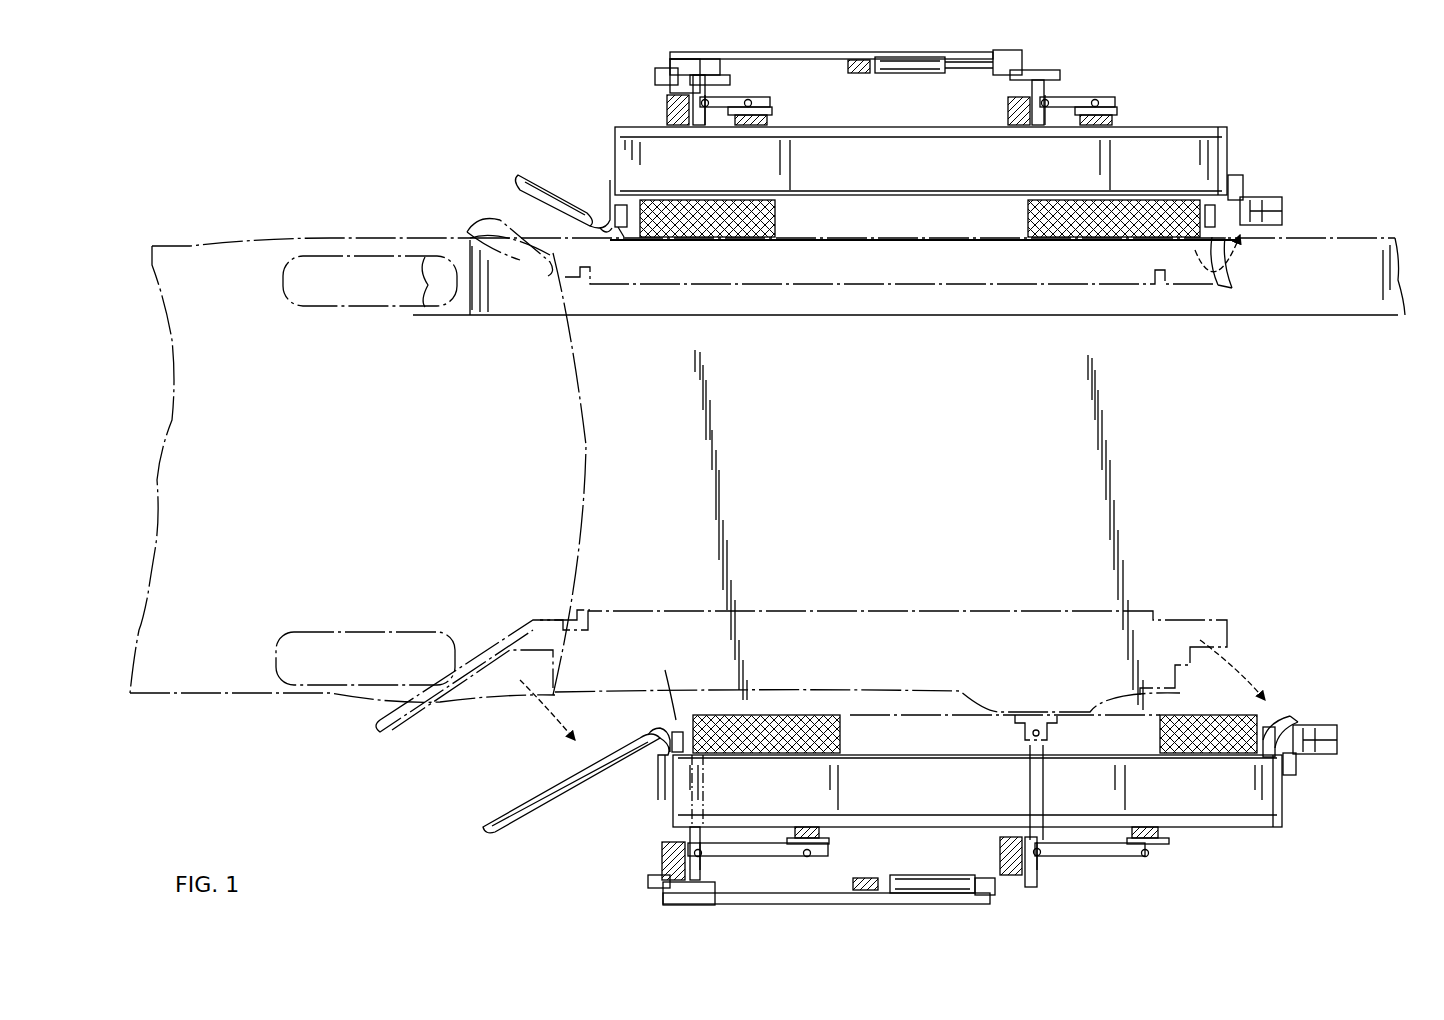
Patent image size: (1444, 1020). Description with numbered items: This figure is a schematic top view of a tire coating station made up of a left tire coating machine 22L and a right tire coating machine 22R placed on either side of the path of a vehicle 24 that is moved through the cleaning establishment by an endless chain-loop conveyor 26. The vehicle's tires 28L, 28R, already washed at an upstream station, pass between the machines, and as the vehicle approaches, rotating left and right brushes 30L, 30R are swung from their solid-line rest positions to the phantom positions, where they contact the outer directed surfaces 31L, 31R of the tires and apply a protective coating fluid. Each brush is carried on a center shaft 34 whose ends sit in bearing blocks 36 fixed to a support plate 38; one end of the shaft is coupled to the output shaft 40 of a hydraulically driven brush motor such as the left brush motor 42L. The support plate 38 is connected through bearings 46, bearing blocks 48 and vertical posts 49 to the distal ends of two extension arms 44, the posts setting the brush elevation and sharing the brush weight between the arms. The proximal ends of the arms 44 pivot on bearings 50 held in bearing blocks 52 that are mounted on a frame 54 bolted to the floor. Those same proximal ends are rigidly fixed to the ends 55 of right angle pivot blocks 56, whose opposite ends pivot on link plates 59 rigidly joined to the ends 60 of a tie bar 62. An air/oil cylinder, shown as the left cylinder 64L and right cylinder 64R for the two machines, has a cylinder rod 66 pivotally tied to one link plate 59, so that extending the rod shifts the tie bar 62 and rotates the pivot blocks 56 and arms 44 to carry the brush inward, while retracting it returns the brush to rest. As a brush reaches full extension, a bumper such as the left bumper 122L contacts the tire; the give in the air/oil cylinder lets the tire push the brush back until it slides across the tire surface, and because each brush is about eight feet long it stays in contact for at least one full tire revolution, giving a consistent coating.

The left tire coating machine 22L is at (900, 481).
The right tire coating machine 22R is at (1295, 850).
The vehicle 24 is at (590, 510).
The conveyor 26 is at (822, 305).
The left tire 28L is at (308, 308).
The right tire 28R is at (395, 630).
The left brush 30L is at (1070, 245).
The right brush 30R is at (1192, 708).
The outer surface of left tire 31L is at (378, 255).
The outer surface of right tire 31R is at (325, 702).
The center shaft 34 is at (624, 237).
The bearing block 36 is at (628, 240).
The support plate 38 is at (1228, 135).
The output shaft 40 is at (1243, 188).
The left brush motor 42L is at (1284, 208).
The extension arm 44 is at (735, 100).
The bearing 46 is at (755, 100).
The bearing block 48 is at (770, 112).
The vertical post 49 is at (765, 125).
The bearing 50 is at (712, 110).
The bearing block 52 is at (698, 115).
The frame 54 is at (657, 76).
The end of pivot block 55 is at (712, 80).
The right angle pivot block 56 is at (668, 100).
The link plate 59 is at (672, 62).
The end of tie bar 60 is at (672, 60).
The tie bar 62 is at (866, 54).
The left cylinder 64L is at (925, 78).
The right cylinder 64R is at (925, 876).
The cylinder rod 66 is at (925, 475).
The left bumper 122L is at (545, 230).